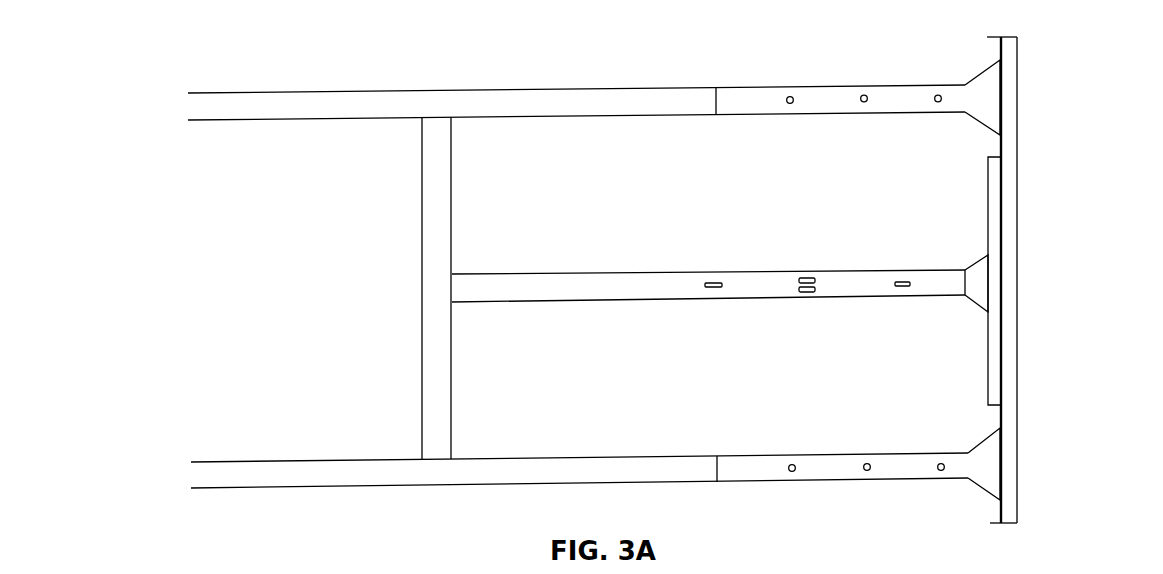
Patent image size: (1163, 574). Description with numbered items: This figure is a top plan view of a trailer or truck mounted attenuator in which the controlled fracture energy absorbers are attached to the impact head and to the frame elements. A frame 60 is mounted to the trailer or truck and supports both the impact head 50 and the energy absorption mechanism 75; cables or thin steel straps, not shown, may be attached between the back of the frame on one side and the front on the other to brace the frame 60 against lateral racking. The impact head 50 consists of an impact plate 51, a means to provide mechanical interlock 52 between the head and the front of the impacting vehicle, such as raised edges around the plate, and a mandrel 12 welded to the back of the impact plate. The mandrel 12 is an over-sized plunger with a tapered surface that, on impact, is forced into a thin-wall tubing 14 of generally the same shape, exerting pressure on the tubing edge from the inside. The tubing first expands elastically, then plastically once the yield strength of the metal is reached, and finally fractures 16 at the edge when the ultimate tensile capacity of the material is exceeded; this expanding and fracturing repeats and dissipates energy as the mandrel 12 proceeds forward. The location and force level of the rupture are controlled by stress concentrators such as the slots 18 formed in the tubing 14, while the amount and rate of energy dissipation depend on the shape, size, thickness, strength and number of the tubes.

The mandrel 12 is at (940, 307).
The thin-wall tubing 14 is at (708, 263).
The fracture 16 is at (866, 283).
The slots 18 is at (807, 255).
The impact head 50 is at (1058, 253).
The impact plate 51 is at (956, 281).
The mechanical interlock means 52 is at (1013, 127).
The frame 60 is at (363, 458).
The energy absorption mechanism 75 is at (523, 456).